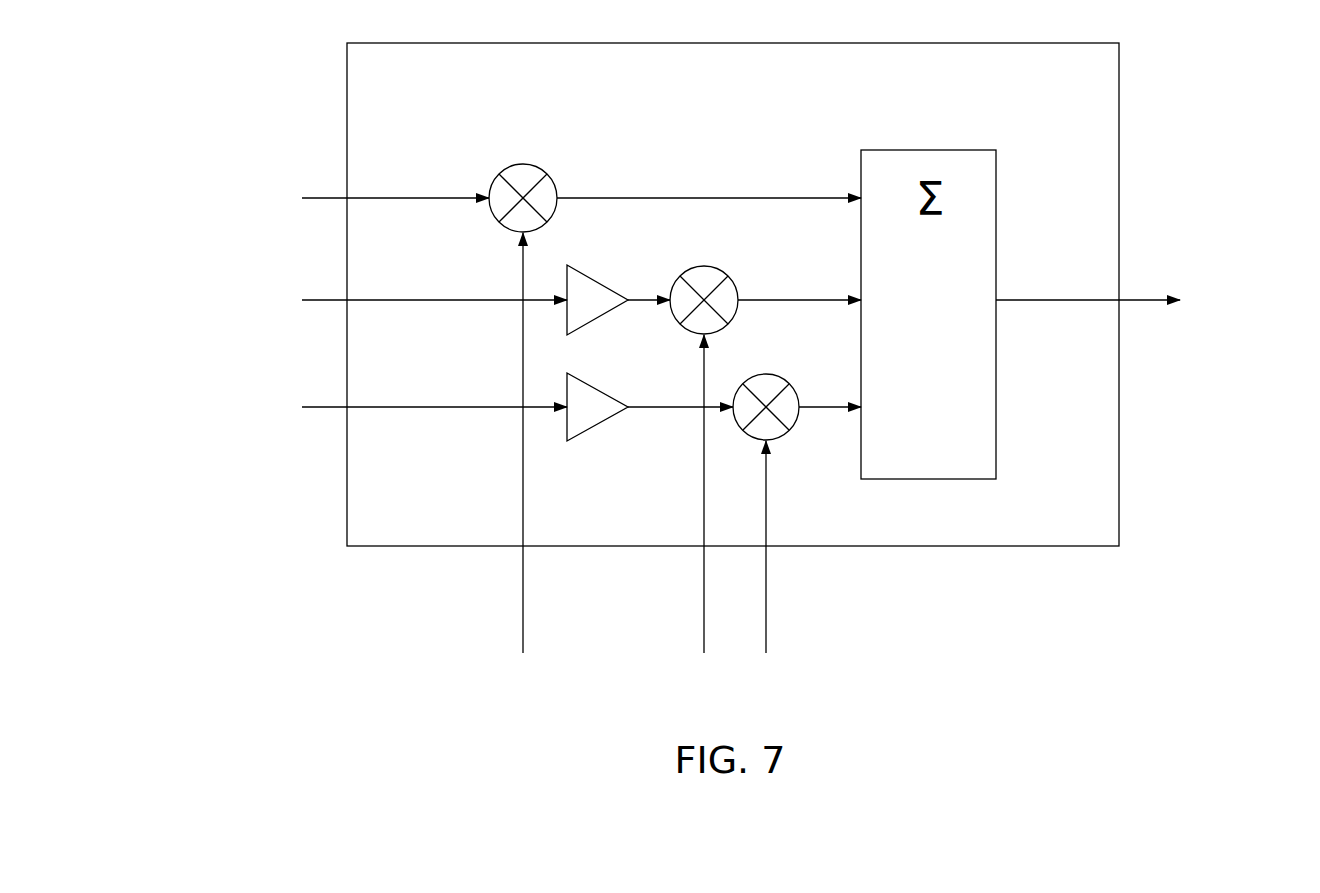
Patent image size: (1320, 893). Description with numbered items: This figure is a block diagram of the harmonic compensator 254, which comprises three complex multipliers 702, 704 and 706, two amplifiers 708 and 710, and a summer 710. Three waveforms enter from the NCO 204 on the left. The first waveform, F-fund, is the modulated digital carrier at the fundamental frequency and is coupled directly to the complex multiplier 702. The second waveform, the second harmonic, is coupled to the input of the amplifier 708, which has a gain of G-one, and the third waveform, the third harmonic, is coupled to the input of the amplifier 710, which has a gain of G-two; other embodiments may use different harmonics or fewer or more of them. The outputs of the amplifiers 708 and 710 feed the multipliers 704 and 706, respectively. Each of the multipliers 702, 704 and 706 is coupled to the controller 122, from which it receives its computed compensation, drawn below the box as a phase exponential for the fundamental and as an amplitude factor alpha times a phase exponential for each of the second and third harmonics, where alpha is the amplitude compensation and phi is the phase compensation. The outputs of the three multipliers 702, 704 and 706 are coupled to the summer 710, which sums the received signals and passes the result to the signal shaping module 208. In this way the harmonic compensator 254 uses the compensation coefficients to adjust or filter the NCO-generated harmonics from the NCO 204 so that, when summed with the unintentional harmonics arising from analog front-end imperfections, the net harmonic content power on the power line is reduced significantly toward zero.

The harmonic compensator 254 is at (1119, 110).
The NCO 204 is at (347, 302).
The complex multiplier 702 is at (556, 183).
The complex multiplier 704 is at (717, 267).
The complex multiplier 706 is at (767, 373).
The amplifier 708 is at (590, 275).
The amplifier 710 is at (590, 383).
The signal shaping module 208 is at (1158, 246).
The controller 122 is at (659, 466).